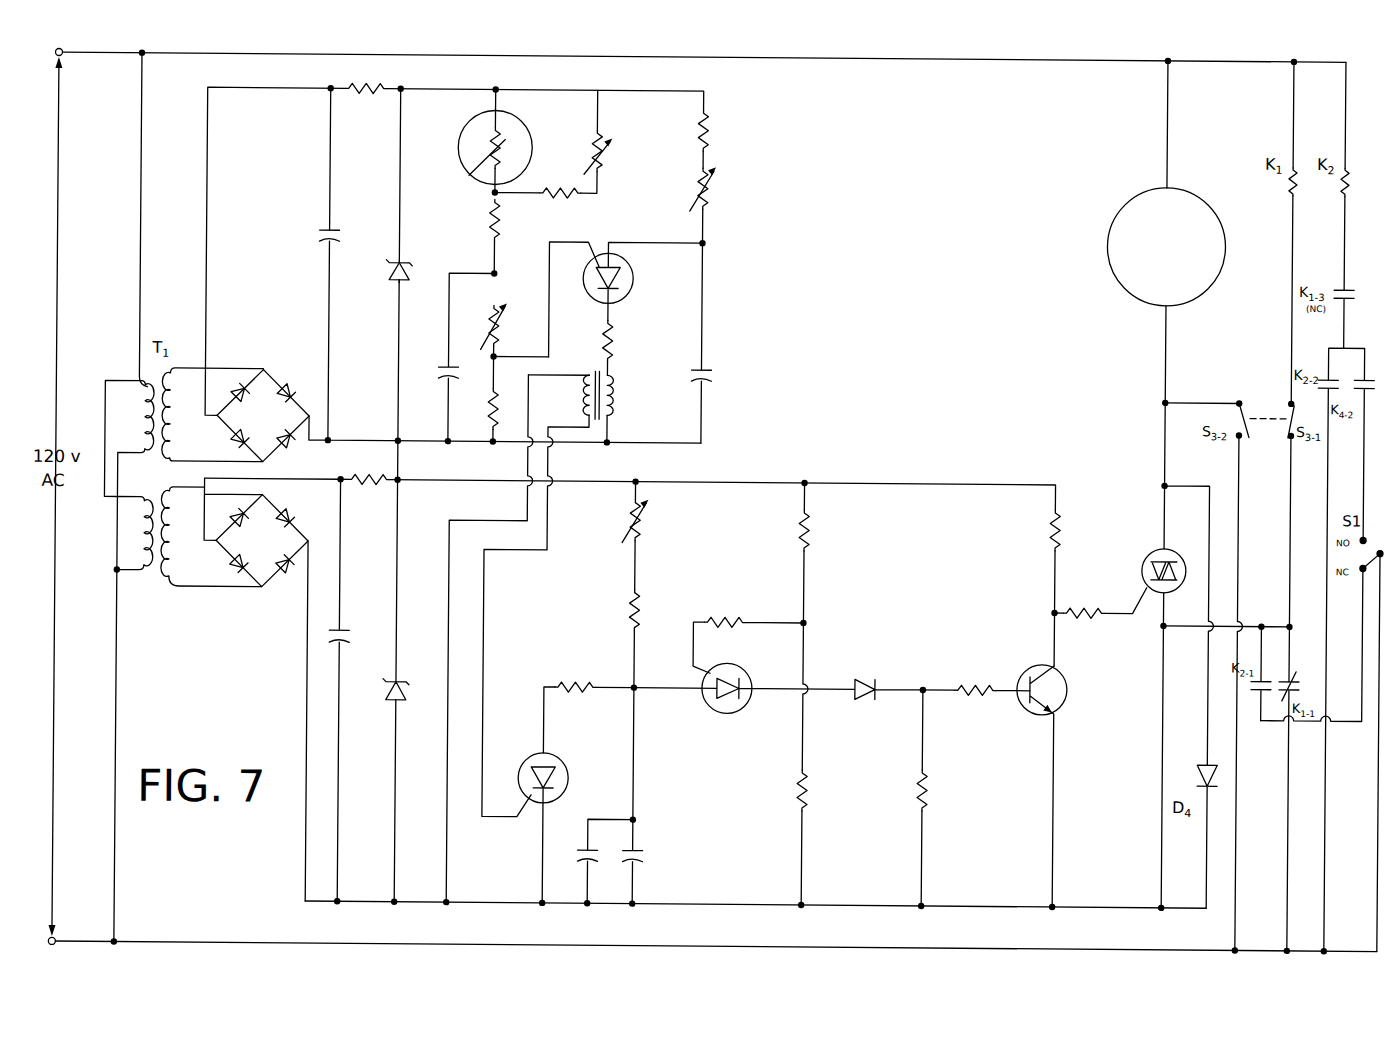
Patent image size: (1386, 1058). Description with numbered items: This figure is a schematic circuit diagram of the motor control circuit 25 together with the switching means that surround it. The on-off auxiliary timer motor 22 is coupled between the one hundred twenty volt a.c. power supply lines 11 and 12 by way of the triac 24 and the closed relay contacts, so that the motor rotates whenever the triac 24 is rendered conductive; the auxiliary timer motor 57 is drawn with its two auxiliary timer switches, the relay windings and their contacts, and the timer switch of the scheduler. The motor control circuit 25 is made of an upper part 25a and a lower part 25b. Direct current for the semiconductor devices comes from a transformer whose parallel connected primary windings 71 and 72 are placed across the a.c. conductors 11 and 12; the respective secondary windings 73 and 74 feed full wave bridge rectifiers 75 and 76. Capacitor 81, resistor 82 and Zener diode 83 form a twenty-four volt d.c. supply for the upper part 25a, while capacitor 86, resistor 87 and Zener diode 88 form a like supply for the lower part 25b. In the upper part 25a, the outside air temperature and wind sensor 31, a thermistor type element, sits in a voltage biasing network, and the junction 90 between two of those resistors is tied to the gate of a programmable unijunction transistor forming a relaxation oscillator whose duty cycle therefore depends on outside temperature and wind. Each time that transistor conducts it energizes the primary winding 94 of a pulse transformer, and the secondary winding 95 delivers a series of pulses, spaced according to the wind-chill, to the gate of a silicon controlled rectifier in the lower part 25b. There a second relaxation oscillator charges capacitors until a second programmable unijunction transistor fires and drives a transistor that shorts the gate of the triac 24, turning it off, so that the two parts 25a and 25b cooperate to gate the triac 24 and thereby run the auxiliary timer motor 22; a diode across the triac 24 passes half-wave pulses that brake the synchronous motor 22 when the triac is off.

The a.c. power supply line 11 is at (260, 941).
The a.c. power supply line 12 is at (278, 55).
The on-off auxiliary timer motor 22 is at (1213, 203).
The triac 24 is at (1149, 553).
The motor control circuit 25 is at (830, 301).
The upper part of motor control circuit 25a is at (486, 484).
The lower part of motor control circuit 25b is at (705, 671).
The outside air temperature and wind sensor 31 is at (469, 173).
The auxiliary timer motor 57 is at (1165, 361).
The primary winding 71 is at (139, 373).
The primary winding 72 is at (143, 576).
The secondary winding 73 is at (177, 426).
The secondary winding 74 is at (177, 553).
The full wave bridge rectifier 75 is at (278, 373).
The full wave bridge rectifier 76 is at (291, 536).
The capacitor 81 is at (342, 234).
The resistor 82 is at (367, 83).
The Zener diode 83 is at (404, 280).
The capacitor 86 is at (356, 638).
The resistor 87 is at (377, 489).
The Zener diode 88 is at (404, 699).
The junction 90 is at (501, 355).
The primary winding of transformer T2 94 is at (618, 395).
The secondary winding of transformer T2 95 is at (579, 394).